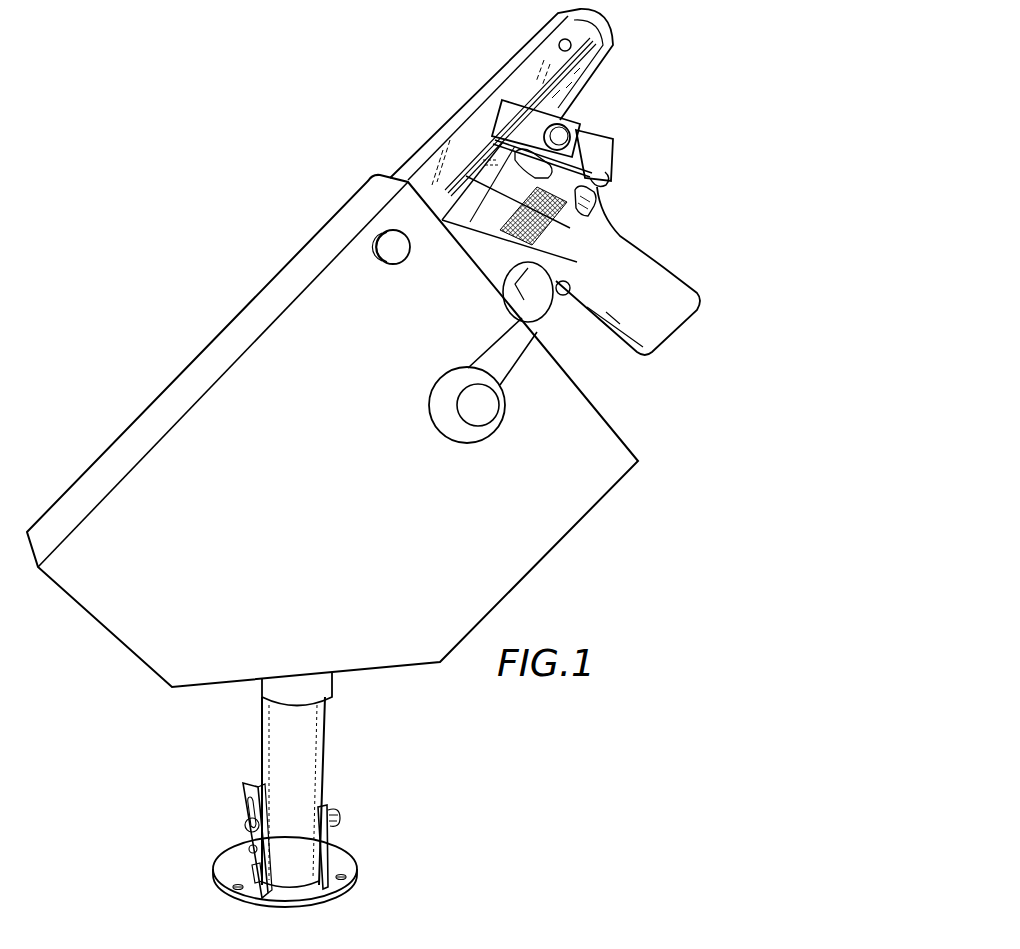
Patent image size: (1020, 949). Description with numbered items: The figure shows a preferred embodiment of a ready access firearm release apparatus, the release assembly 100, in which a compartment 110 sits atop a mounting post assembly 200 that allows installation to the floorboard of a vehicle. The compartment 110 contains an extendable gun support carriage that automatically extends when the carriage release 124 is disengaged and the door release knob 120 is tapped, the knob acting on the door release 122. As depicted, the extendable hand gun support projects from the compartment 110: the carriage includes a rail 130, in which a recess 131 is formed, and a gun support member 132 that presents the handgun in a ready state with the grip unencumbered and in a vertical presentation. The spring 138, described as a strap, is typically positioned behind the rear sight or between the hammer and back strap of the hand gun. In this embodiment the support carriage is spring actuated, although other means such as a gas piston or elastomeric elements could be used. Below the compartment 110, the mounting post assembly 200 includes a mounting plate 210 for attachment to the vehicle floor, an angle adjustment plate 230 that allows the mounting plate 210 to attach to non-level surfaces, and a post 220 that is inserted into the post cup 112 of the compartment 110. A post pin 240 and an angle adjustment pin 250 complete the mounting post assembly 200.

The release assembly 100 is at (233, 262).
The compartment 110 is at (78, 490).
The post cup 112 is at (265, 690).
The door release knob 120 is at (495, 406).
The door release 122 is at (528, 337).
The carriage release 124 is at (386, 240).
The rail 130 is at (556, 22).
The recess 131 is at (558, 44).
The support member 132 is at (575, 98).
The spring 138 is at (610, 160).
The mounting post assembly 200 is at (384, 809).
The mounting plate 210 is at (225, 867).
The post 220 is at (320, 742).
The angle adjustment plate 230 is at (250, 797).
The post pin 240 is at (340, 820).
The angle adjustment pin 250 is at (232, 882).